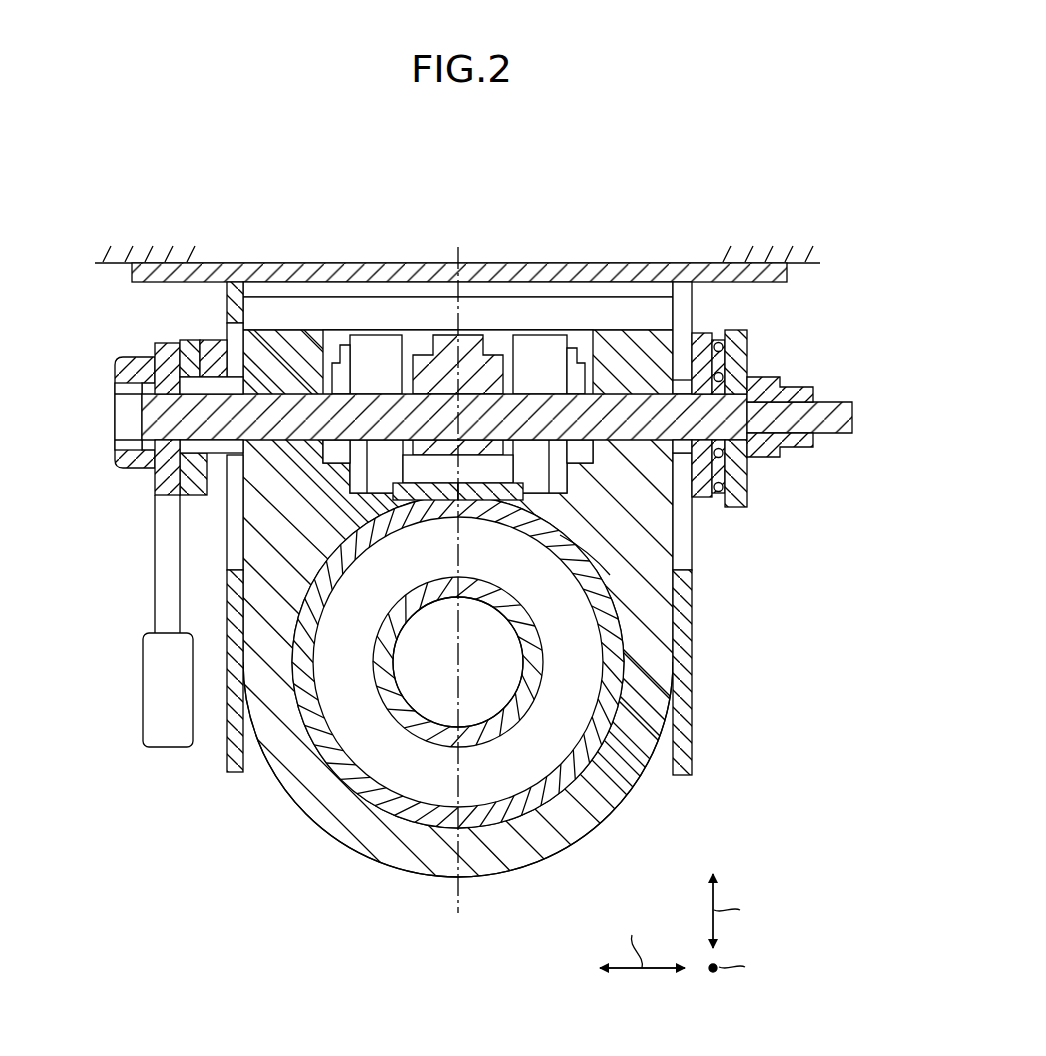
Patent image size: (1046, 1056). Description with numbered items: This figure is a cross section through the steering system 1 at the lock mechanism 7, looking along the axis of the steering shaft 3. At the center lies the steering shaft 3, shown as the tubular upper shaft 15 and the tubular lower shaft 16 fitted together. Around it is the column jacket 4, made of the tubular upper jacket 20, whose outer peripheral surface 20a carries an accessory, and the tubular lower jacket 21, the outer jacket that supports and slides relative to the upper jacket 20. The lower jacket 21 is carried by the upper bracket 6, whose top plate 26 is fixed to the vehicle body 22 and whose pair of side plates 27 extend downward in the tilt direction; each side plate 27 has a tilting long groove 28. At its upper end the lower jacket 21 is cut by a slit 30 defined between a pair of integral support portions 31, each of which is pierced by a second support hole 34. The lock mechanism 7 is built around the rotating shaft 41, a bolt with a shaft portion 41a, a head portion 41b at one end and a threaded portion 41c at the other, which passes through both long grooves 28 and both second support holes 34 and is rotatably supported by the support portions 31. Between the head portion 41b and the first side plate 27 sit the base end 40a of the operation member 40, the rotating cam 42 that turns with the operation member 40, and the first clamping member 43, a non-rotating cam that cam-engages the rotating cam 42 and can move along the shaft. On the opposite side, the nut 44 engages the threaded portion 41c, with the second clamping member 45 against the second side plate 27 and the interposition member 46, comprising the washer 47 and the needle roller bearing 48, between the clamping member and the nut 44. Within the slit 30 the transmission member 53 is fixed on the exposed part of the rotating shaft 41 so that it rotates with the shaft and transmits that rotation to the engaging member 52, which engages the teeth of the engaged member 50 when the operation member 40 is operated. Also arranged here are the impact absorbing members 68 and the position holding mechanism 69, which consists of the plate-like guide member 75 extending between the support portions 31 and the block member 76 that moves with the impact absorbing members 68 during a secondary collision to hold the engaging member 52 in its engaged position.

The steering system 1 is at (523, 574).
The steering shaft 3 is at (589, 664).
The column jacket 4 is at (520, 725).
The upper bracket 6 is at (597, 261).
The lock mechanism 7 is at (450, 376).
The upper shaft 15 is at (525, 708).
The lower shaft 16 is at (505, 662).
The upper jacket 20 is at (385, 810).
The outer peripheral surface 20a is at (590, 541).
The lower jacket 21 is at (330, 815).
The vehicle body 22 is at (137, 262).
The top plate 26 is at (366, 272).
The side plates 27 is at (232, 300).
The tilting long groove 28 is at (235, 567).
The slit 30 is at (574, 339).
The support portions 31 is at (523, 561).
The second support hole 34 is at (293, 377).
The operation member 40 is at (132, 593).
The base end 40a is at (158, 490).
The rotating shaft 41 is at (457, 376).
The shaft portion 41a is at (193, 427).
The head portion 41b is at (125, 367).
The threaded portion 41c is at (782, 387).
The rotating cam 42 is at (190, 465).
The first clamping member 43 is at (217, 340).
The nut 44 is at (773, 376).
The second clamping member 45 is at (697, 495).
The interposition member 46 is at (788, 421).
The washer 47 is at (747, 470).
The needle roller bearing 48 is at (723, 480).
The engaged member 50 is at (483, 503).
The engaging member 52 is at (428, 488).
The transmission member 53 is at (459, 331).
The impact absorbing members 68 is at (345, 348).
The position holding mechanism 69 is at (458, 316).
The guide member 75 is at (435, 296).
The block member 76 is at (383, 308).